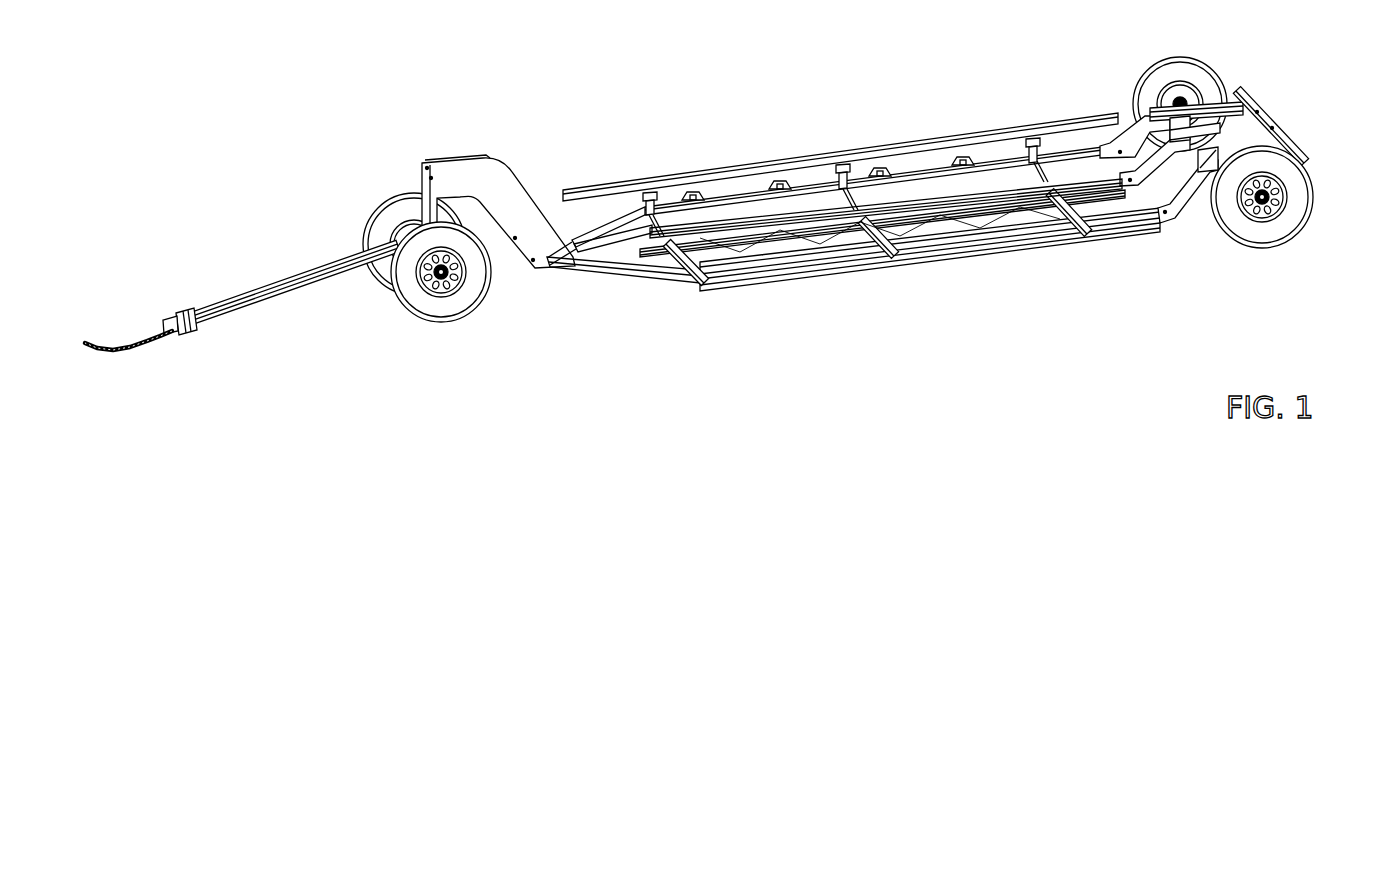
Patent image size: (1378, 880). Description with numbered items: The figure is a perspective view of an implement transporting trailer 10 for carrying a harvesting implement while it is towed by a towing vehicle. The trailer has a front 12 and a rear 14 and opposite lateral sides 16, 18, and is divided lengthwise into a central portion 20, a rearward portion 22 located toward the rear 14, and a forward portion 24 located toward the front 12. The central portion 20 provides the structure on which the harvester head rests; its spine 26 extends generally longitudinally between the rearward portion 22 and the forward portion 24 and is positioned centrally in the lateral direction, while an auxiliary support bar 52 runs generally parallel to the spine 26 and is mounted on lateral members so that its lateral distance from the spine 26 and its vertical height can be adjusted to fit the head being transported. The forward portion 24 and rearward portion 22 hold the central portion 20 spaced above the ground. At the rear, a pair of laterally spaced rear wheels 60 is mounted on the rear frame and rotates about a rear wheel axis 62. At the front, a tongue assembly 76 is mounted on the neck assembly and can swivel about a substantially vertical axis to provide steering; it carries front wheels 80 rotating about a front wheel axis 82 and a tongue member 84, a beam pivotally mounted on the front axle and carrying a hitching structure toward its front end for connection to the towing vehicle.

The implement transporting trailer 10 is at (919, 75).
The front 12 is at (223, 338).
The rear 14 is at (1281, 86).
The lateral side 16 is at (804, 302).
The lateral side 18 is at (696, 152).
The central portion 20 is at (833, 131).
The rearward portion 22 is at (1152, 46).
The forward portion 24 is at (456, 147).
The spine 26 is at (950, 198).
The auxiliary support bar 52 is at (920, 142).
The rear wheel 60 is at (1300, 188).
The rear wheel axis 62 is at (1345, 290).
The tongue assembly 76 is at (303, 237).
The front wheel 80 is at (436, 312).
The front wheel axis 82 is at (460, 290).
The tongue member 84 is at (270, 300).